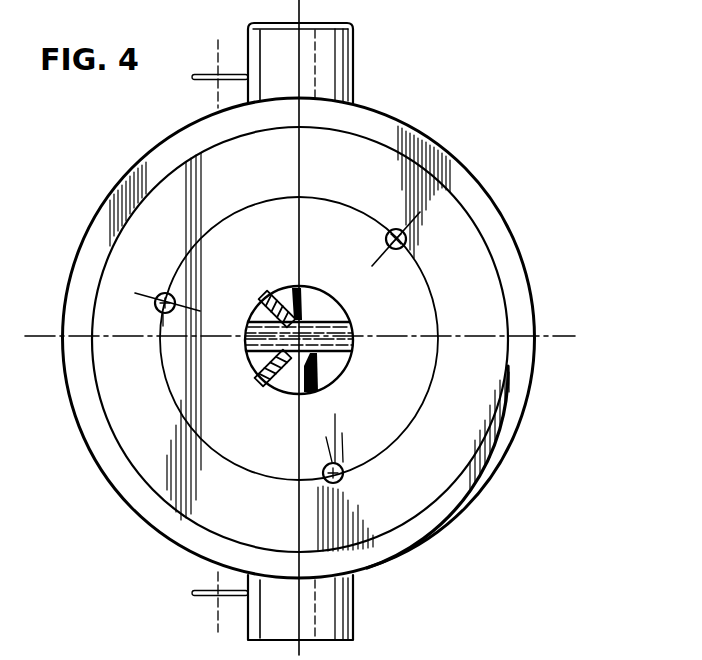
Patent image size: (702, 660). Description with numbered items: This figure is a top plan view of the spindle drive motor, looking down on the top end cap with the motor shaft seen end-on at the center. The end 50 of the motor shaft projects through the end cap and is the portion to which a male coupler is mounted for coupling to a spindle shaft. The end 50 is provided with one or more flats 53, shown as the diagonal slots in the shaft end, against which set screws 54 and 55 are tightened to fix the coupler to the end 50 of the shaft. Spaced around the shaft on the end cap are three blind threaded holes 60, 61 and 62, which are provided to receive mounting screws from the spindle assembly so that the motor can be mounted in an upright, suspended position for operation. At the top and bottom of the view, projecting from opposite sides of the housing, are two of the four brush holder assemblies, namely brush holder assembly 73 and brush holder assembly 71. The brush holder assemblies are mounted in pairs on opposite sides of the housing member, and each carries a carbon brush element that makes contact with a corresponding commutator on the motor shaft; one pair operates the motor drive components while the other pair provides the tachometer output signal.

The end 50 is at (309, 335).
The flats 53 is at (250, 346).
The set screw 54 is at (276, 288).
The set screw 55 is at (287, 394).
The blind threaded hole 60 is at (167, 281).
The blind threaded hole 61 is at (370, 452).
The blind threaded hole 62 is at (392, 221).
The brush holder assembly 71 is at (296, 606).
The brush holder assembly 73 is at (305, 65).